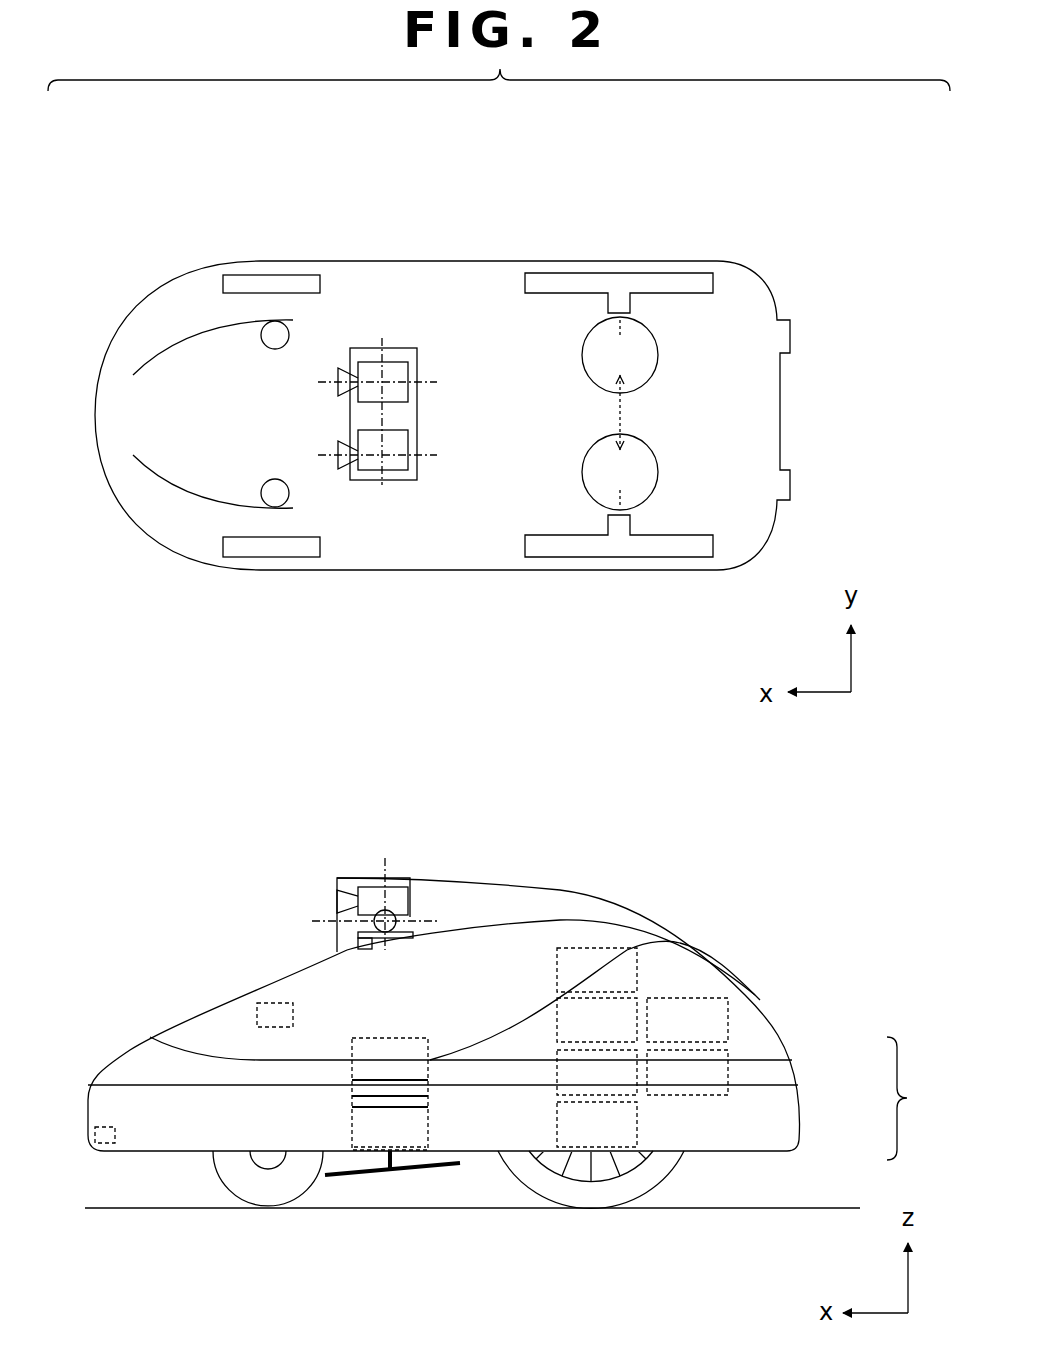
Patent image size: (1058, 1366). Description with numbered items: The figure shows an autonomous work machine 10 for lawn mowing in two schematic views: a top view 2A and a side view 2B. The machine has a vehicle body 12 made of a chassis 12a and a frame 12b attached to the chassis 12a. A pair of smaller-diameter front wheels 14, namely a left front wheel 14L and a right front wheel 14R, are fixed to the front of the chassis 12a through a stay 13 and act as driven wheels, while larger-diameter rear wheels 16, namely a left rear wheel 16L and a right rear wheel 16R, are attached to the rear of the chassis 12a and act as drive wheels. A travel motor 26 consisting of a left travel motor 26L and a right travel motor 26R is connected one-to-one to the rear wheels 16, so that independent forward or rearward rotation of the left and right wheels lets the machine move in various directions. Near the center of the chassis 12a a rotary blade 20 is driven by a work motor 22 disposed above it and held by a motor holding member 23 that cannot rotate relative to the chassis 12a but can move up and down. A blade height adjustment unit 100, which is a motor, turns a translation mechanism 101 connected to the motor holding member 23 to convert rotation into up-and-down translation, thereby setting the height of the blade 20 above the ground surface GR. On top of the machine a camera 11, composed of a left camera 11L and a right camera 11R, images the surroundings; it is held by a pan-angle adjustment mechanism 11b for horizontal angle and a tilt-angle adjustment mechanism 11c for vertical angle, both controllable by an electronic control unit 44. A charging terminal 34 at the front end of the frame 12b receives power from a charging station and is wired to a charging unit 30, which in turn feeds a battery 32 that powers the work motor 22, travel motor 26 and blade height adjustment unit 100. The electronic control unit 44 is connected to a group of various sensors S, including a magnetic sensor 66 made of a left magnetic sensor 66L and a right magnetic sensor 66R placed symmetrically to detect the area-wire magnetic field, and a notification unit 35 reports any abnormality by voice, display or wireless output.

The schematic top view 2A is at (148, 200).
The schematic side view 2B is at (148, 893).
The autonomous work machine 10 is at (727, 513).
The camera 11 is at (410, 876).
The right camera 11R is at (393, 372).
The left camera 11L is at (380, 465).
The pan-angle adjustment mechanism 11b is at (358, 935).
The tilt-angle adjustment mechanism 11c is at (395, 915).
The vehicle body 12 is at (916, 1098).
The chassis 12a is at (768, 1117).
The frame 12b is at (763, 1037).
The stay 13 is at (262, 1158).
The front wheels 14 is at (278, 1188).
The right front wheel 14R is at (278, 273).
The left front wheel 14L is at (275, 558).
The rear wheels 16 is at (575, 1190).
The right rear wheel 16R is at (630, 273).
The left rear wheel 16L is at (655, 558).
The blade 20 is at (390, 1178).
The work motor 22 is at (352, 1146).
The motor holding member 23 is at (352, 1100).
The travel motor 26 is at (556, 1130).
The right travel motor 26R is at (658, 348).
The left travel motor 26L is at (658, 472).
The charging unit 30 is at (693, 997).
The battery 32 is at (707, 1096).
The charging terminal 34 is at (103, 1145).
The notification unit 35 is at (556, 970).
The electronic control unit 44 is at (556, 1018).
The magnetic sensor 66 is at (255, 1008).
The right magnetic sensor 66R is at (270, 333).
The left magnetic sensor 66L is at (270, 495).
The blade height adjustment unit 100 is at (386, 1037).
The translation mechanism 101 is at (430, 1087).
The group of various sensors S is at (638, 1094).
The ground surface GR is at (488, 1210).